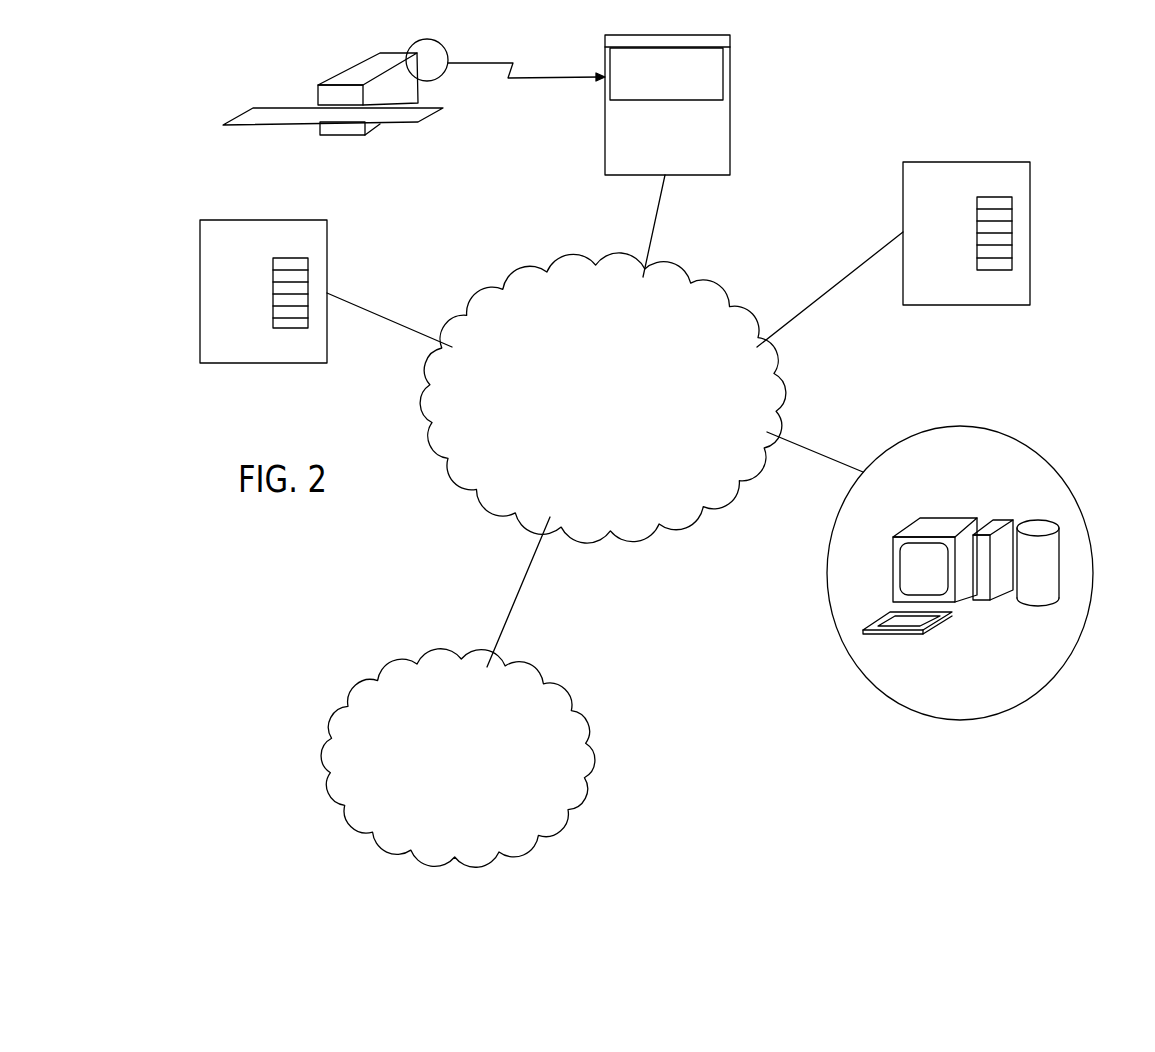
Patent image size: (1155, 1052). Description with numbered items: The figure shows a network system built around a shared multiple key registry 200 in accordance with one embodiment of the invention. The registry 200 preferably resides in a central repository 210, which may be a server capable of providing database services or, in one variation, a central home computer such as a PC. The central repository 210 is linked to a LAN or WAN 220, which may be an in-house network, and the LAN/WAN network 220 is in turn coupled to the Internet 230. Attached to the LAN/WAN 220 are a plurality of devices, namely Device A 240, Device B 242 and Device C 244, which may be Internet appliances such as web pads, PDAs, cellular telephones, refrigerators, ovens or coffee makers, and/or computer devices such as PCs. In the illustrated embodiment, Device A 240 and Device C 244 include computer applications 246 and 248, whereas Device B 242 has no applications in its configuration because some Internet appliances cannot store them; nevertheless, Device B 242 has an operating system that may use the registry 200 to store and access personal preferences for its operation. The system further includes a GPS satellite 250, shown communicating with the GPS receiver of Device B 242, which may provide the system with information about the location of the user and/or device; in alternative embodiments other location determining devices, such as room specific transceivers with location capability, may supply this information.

The shared multiple key registry 200 is at (1035, 603).
The central repository 210 is at (977, 608).
The LAN/WAN network 220 is at (698, 510).
The Internet 230 is at (590, 763).
The Device A 240 is at (273, 291).
The Device B 242 is at (605, 100).
The Device C 244 is at (924, 198).
The computer application 246 is at (308, 262).
The computer application 248 is at (992, 197).
The GPS satellite 250 is at (400, 120).